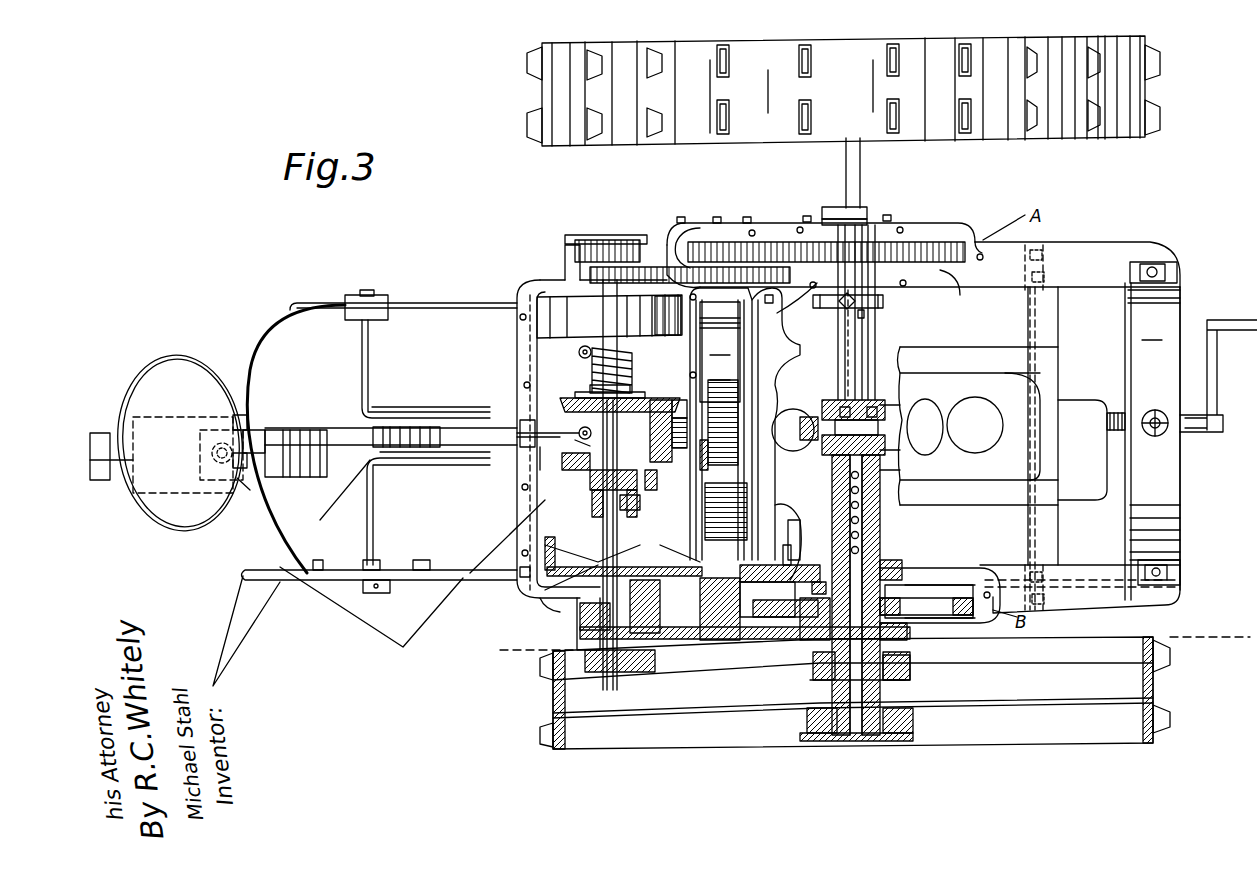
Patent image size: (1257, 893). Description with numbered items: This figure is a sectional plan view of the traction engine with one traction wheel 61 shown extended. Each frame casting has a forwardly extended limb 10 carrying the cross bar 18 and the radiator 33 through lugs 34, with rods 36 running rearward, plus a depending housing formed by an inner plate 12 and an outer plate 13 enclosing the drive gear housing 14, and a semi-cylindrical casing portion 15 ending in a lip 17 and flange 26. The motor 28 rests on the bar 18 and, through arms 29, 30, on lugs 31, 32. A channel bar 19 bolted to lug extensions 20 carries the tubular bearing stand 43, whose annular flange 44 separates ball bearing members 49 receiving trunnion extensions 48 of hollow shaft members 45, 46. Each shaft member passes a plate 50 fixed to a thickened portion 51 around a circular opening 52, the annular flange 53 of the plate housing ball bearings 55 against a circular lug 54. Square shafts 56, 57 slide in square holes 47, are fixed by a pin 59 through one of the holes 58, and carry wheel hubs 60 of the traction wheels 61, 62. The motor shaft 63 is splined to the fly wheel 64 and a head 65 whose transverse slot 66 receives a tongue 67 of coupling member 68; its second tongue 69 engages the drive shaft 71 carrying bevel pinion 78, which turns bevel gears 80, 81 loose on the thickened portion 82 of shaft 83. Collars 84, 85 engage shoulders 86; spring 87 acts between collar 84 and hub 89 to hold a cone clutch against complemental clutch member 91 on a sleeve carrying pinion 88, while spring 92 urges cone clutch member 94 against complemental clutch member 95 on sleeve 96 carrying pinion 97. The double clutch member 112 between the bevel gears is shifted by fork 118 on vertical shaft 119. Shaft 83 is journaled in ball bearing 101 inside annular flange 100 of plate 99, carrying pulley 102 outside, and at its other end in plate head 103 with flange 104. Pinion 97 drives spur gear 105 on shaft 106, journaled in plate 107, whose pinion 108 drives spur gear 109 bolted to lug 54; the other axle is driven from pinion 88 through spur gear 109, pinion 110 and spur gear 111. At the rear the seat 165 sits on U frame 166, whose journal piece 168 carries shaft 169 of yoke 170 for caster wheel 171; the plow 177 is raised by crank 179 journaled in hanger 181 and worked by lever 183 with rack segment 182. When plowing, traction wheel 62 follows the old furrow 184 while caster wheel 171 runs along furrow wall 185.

The forwardly extended limb 10 is at (1075, 250).
The inner plate 12 is at (932, 287).
The outer plate 13 is at (925, 228).
The drive gear housing 14 is at (955, 295).
The semi-cylindrical casing portion 15 is at (545, 353).
The semi-circular lip 17 is at (520, 427).
The cross bar 18 is at (1048, 320).
The channel bar 19 is at (893, 357).
The lug extension 20 is at (883, 308).
The flange 26 is at (525, 290).
The motor 28 is at (1017, 463).
The arm 29 is at (770, 333).
The arm 30 is at (786, 523).
The lug 31 is at (790, 293).
The lug 32 is at (790, 540).
The radiator 33 is at (1130, 312).
The lug 34 is at (1165, 275).
The rod 36 is at (1120, 410).
The tubular bearing stand 43 is at (828, 413).
The annular flange 44 is at (880, 428).
The shaft member 45 is at (875, 338).
The shaft member 46 is at (880, 477).
The square hole 47 is at (840, 403).
The trunnion extension 48 is at (825, 455).
The ball bearing member 49 is at (880, 410).
The plate 50 is at (868, 215).
The thickened portion 51 is at (910, 637).
The circular opening 52 is at (800, 645).
The annular flange 53 is at (910, 668).
The circular lug 54 is at (820, 591).
The ball bearing 55 is at (907, 672).
The square shaft 56 is at (843, 176).
The square shaft 57 is at (853, 675).
The hole 58 is at (848, 519).
The pin 59 is at (860, 312).
The wheel hub 60 is at (832, 727).
The traction wheel 61 is at (542, 94).
The traction wheel 62 is at (585, 740).
The motor shaft 63 is at (747, 430).
The fly wheel 64 is at (713, 337).
The head 65 is at (747, 377).
The transverse slot 66 is at (700, 540).
The tongue 67 is at (750, 420).
The coupling member 68 is at (692, 400).
The second tongue 69 is at (667, 482).
The drive shaft 71 is at (677, 417).
The bevel pinion 78 is at (653, 407).
The bevel gear 80 is at (577, 405).
The bevel gear 81 is at (547, 463).
The thickened portion 82 is at (583, 468).
The shaft 83 is at (625, 670).
The collar 84 is at (627, 387).
The collar 85 is at (635, 478).
The shoulder 86 is at (598, 505).
The spring 87 is at (588, 367).
The pinion 88 is at (585, 282).
The hub 89 is at (610, 345).
The complemental clutch member 91 is at (535, 322).
The spring 92 is at (643, 500).
The cone clutch member 94 is at (578, 540).
The complemental clutch member 95 is at (525, 568).
The sleeve 96 is at (580, 598).
The pinion 97 is at (560, 605).
The plate 99 is at (560, 640).
The annular flange 100 is at (668, 635).
The ball bearing 101 is at (590, 622).
The pulley 102 is at (597, 660).
The plate head 103 is at (598, 236).
The annular flange 104 is at (615, 243).
The spur gear 105 is at (780, 547).
The shaft 106 is at (703, 543).
The plate 107 is at (712, 645).
The pinion 108 is at (708, 625).
The spur gear 109 is at (778, 268).
The pinion 110 is at (672, 245).
The spur gear 111 is at (985, 243).
The double clutch member 112 is at (600, 485).
The fork 118 is at (580, 431).
The vertical shaft 119 is at (585, 439).
The seat 165 is at (165, 358).
The U frame 166 is at (270, 338).
The journal piece 168 is at (250, 437).
The shaft 169 is at (222, 447).
The yoke 170 is at (230, 483).
The caster wheel 171 is at (283, 468).
The plow 177 is at (430, 607).
The crank 179 is at (430, 408).
The hanger 181 is at (380, 318).
The rack segment 182 is at (427, 562).
The lever 183 is at (325, 585).
The furrow 184 is at (1197, 640).
The furrow wall 185 is at (337, 428).